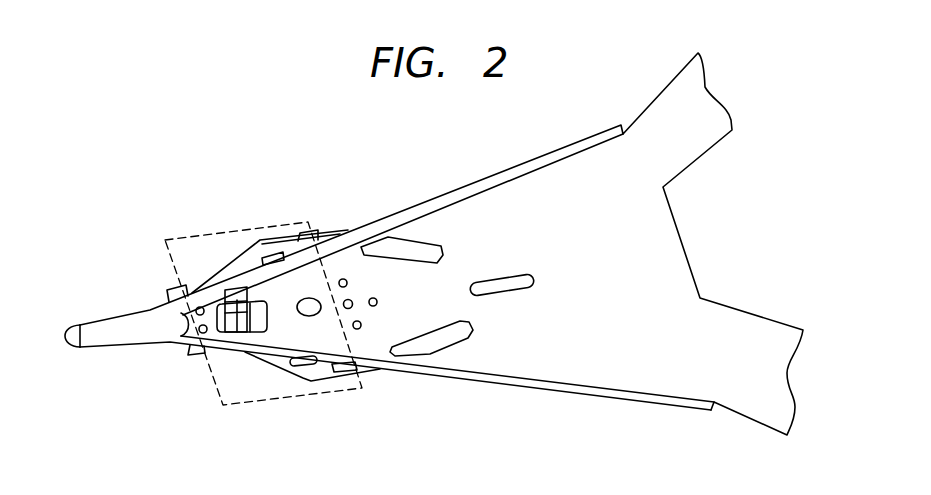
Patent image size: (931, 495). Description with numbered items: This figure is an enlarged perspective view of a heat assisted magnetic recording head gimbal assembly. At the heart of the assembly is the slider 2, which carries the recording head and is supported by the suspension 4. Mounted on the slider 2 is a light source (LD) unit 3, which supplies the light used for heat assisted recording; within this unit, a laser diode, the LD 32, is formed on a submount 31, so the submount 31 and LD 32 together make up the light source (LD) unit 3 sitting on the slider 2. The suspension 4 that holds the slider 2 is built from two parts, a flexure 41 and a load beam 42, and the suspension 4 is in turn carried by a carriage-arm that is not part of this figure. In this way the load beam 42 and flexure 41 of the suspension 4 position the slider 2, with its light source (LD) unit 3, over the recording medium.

The slider 2 is at (257, 318).
The light source (LD) unit 3 is at (368, 128).
The submount 31 is at (244, 289).
The LD (laser diode) 32 is at (256, 318).
The suspension 4 is at (500, 198).
The flexure 41 is at (322, 358).
The load beam 42 is at (288, 320).